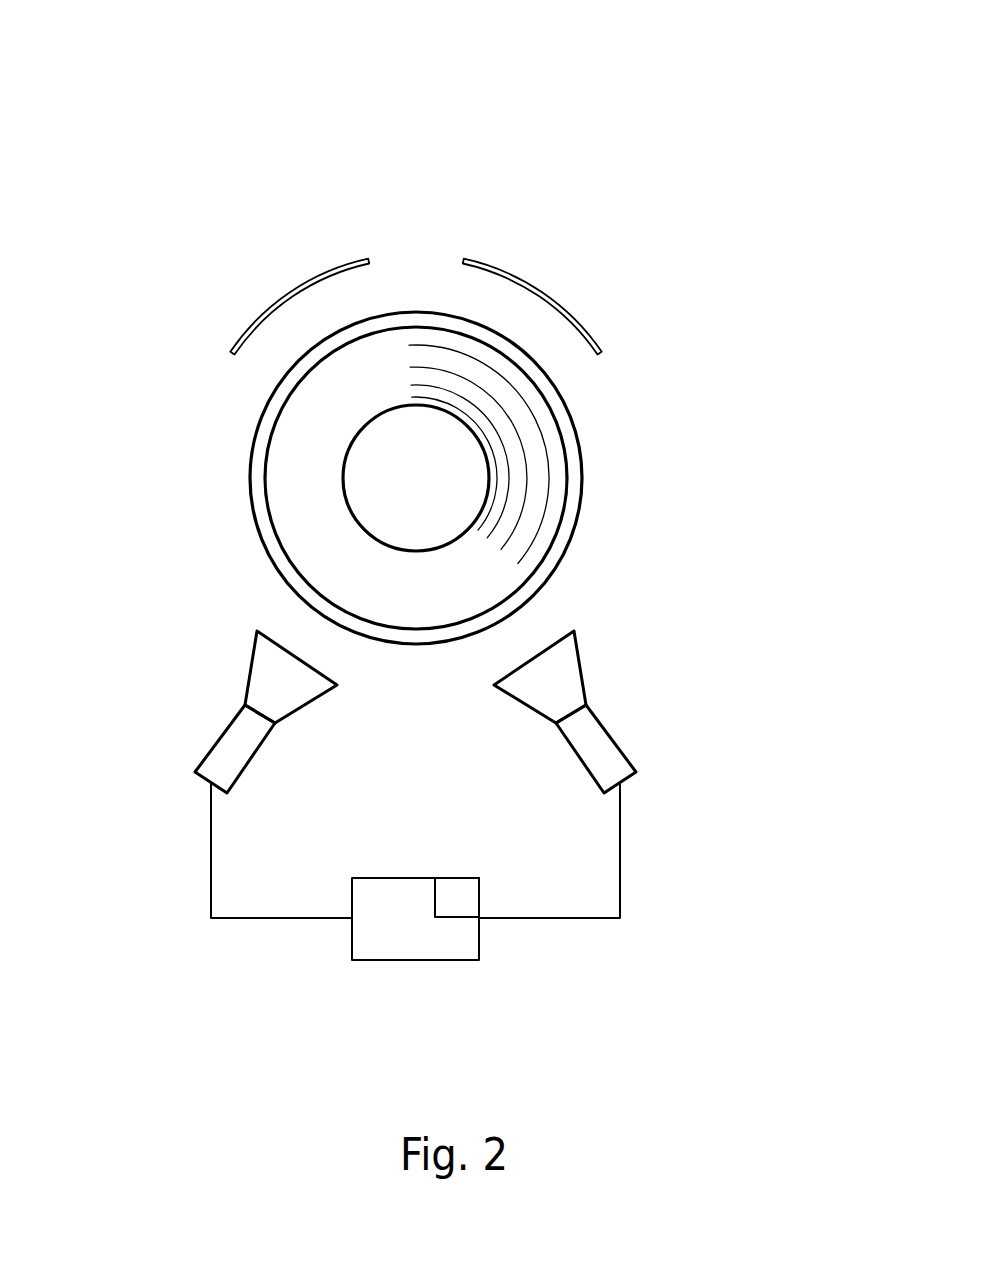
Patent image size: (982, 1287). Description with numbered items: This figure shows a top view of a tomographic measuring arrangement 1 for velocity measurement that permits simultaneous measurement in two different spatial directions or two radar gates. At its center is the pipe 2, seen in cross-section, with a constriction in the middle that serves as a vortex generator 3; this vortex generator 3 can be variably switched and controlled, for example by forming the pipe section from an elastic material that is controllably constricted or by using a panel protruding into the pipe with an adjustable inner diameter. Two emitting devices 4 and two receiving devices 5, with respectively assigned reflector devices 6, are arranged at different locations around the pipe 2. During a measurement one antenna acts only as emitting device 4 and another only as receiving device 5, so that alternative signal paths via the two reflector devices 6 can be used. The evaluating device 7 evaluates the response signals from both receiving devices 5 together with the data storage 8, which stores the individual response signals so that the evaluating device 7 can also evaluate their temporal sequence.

The measuring arrangement 1 is at (435, 211).
The pipe 2 is at (573, 458).
The vortex generator 3 is at (350, 445).
The emitting device 4 is at (431, 712).
The receiving device 5 is at (235, 740).
The reflector device 6 is at (255, 318).
The evaluating device 7 is at (407, 934).
The data storage 8 is at (462, 910).